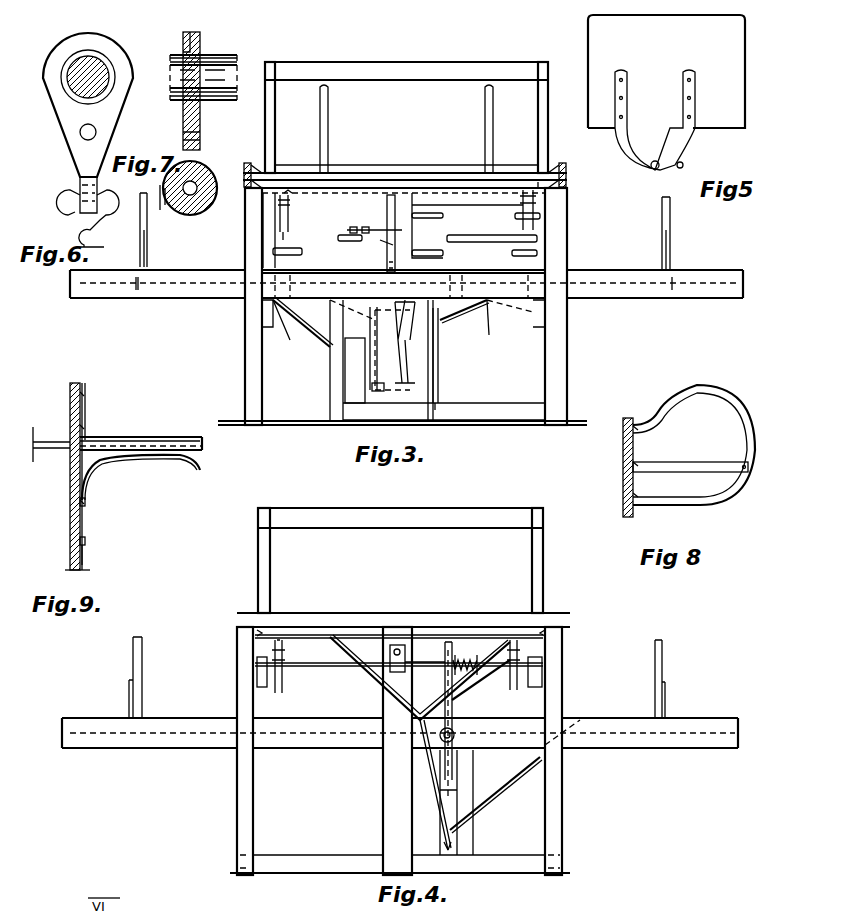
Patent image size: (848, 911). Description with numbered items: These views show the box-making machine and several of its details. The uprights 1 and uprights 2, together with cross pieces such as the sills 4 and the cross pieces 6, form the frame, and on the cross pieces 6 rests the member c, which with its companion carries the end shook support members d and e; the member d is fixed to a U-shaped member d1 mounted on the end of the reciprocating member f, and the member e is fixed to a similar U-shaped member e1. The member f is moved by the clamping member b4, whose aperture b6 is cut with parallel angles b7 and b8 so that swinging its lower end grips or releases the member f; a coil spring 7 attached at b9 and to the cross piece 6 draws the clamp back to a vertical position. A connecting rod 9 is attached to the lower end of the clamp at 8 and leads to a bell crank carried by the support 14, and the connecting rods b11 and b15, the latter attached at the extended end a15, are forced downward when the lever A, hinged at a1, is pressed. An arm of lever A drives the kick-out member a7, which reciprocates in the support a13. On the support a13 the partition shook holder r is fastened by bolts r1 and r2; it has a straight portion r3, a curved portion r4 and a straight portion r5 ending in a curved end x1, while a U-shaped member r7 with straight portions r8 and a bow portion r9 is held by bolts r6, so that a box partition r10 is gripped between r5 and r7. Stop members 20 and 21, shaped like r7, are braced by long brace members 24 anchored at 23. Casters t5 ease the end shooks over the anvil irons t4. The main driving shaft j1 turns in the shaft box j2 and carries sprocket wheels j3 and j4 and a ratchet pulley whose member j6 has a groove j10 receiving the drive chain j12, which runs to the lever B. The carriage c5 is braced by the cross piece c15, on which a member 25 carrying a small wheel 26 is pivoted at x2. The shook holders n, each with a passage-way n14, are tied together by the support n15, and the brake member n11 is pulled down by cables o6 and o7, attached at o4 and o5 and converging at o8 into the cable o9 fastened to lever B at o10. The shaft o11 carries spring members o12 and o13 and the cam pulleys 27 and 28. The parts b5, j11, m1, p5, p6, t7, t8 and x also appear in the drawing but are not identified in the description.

In FIG. 3, the uprights 1 is at (245, 358).
In FIG. 4, the uprights 2 is at (237, 793).
In FIG. 3, the sills or cross pieces 4 is at (480, 412).
In FIG. 4, the sills or cross pieces 4 is at (355, 865).
In FIG. 3, the cross pieces 6 is at (263, 312).
In FIG. 3, the coil spring 7 is at (278, 320).
In FIG. 7, the lower end attachment point 8 is at (198, 198).
In FIG. 3, the connecting rod 9 is at (355, 345).
In FIG. 3, the support 14 is at (450, 320).
In FIG. 3, the stop member 20 is at (290, 225).
In FIG. 3, the stop member 21 is at (548, 250).
In FIG. 3, the brace mounting point 23 is at (348, 243).
In FIG. 3, the long brace member 24 is at (298, 248).
In FIG. 8, the long brace member 24 is at (692, 462).
In FIG. 3, the carriage-lifting member 25 is at (385, 248).
In FIG. 3, the small wheel 26 is at (393, 245).
In FIG. 3, the cam pulley 27 is at (255, 165).
In FIG. 3, the cam pulley 28 is at (568, 162).
In FIG. 3, the pedal or lever A is at (415, 370).
In FIG. 3, the lever B is at (345, 352).
In FIG. 4, the lever B is at (455, 830).
In FIG. 5, the hinge joint a1 is at (692, 88).
In FIG. 9, the kick-out member a7 is at (52, 450).
In FIG. 8, the support a13 is at (623, 503).
In FIG. 3, the extended end of bell crank a15 is at (350, 222).
In FIG. 9, the extended end of bell crank a15 is at (70, 515).
In FIG. 6, the clamping member b4 is at (110, 38).
In FIG. 7, the clamping member b4 is at (195, 32).
In FIG. 3, the clamping member b4 is at (300, 305).
In FIG. 3, the pivot b5 is at (492, 305).
In FIG. 7, the aperture b6 is at (200, 50).
In FIG. 7, the upper angle of aperture b7 is at (182, 50).
In FIG. 7, the lower angle of aperture b8 is at (182, 110).
In FIG. 6, the spring attachment point b9 is at (80, 135).
In FIG. 3, the connecting rod b11 is at (370, 365).
In FIG. 3, the connecting rod b15 is at (440, 377).
In FIG. 3, the parallel member c is at (465, 308).
In FIG. 4, the parallel member c is at (85, 742).
In FIG. 3, the carriage c5 is at (347, 178).
In FIG. 3, the cross piece c15 is at (432, 188).
In FIG. 5, the end shook support member d is at (727, 45).
In FIG. 4, the end shook support member d is at (133, 674).
In FIG. 4, the U-shaped member d1 is at (129, 680).
In FIG. 4, the end shook support member e is at (683, 677).
In FIG. 4, the U-shaped member e1 is at (668, 695).
In FIG. 6, the reciprocating member f is at (68, 84).
In FIG. 7, the reciprocating member f is at (224, 85).
In FIG. 5, the reciprocating member f is at (652, 170).
In FIG. 4, the reciprocating member f is at (182, 735).
In FIG. 4, the main driving shaft j1 is at (305, 670).
In FIG. 4, the shaft box j2 is at (257, 662).
In FIG. 4, the sprocket wheel j3 is at (545, 632).
In FIG. 4, the sprocket wheel j4 is at (252, 638).
In FIG. 4, the ratchet pulley member j6 is at (440, 668).
In FIG. 4, the groove j10 is at (447, 640).
In FIG. 4, the spring j11 is at (470, 655).
In FIG. 4, the drive chain j12 is at (452, 720).
In FIG. 4, the rail m1 is at (562, 763).
In FIG. 3, the side and bottom shook holder n is at (275, 108).
In FIG. 4, the side and bottom shook holder n is at (270, 560).
In FIG. 4, the brake member n11 is at (320, 635).
In FIG. 3, the passage-way n14 is at (538, 186).
In FIG. 3, the support n15 is at (395, 62).
In FIG. 4, the support n15 is at (385, 508).
In FIG. 4, the cable attachment point o4 is at (335, 637).
In FIG. 4, the cable attachment point o5 is at (510, 640).
In FIG. 4, the cable o6 is at (390, 672).
In FIG. 4, the cable o7 is at (465, 690).
In FIG. 4, the convergence point o8 is at (420, 722).
In FIG. 4, the cable o9 is at (438, 800).
In FIG. 4, the cable attachment point o10 is at (446, 848).
In FIG. 3, the shaft o11 is at (425, 173).
In FIG. 3, the spring member o12 is at (328, 113).
In FIG. 3, the spring member o13 is at (493, 110).
In FIG. 4, the pin p5 is at (397, 645).
In FIG. 4, the brace p6 is at (380, 690).
In FIG. 3, the partition shook holder r is at (370, 232).
In FIG. 9, the partition shook holder r is at (118, 462).
In FIG. 9, the bolt r1 is at (86, 541).
In FIG. 9, the bolt r2 is at (86, 502).
In FIG. 9, the straight portion r3 is at (85, 555).
In FIG. 9, the curved portion r4 is at (93, 465).
In FIG. 9, the straight portion r5 is at (148, 458).
In FIG. 8, the bolts r6 is at (623, 494).
In FIG. 9, the bolts r6 is at (70, 420).
In FIG. 8, the U-shaped member r7 is at (655, 410).
In FIG. 9, the U-shaped member r7 is at (130, 437).
In FIG. 9, the straight portions r8 is at (85, 400).
In FIG. 8, the bow portion r9 is at (705, 387).
In FIG. 9, the box partition r10 is at (178, 437).
In FIG. 3, the anvil irons t4 is at (401, 289).
In FIG. 3, the casters t5 is at (258, 275).
In FIG. 3, the bar t7 is at (420, 220).
In FIG. 3, the bar t8 is at (445, 215).
In FIG. 4, the pulley x is at (455, 740).
In FIG. 9, the curved end x1 is at (197, 470).
In FIG. 3, the pivot point x2 is at (391, 180).